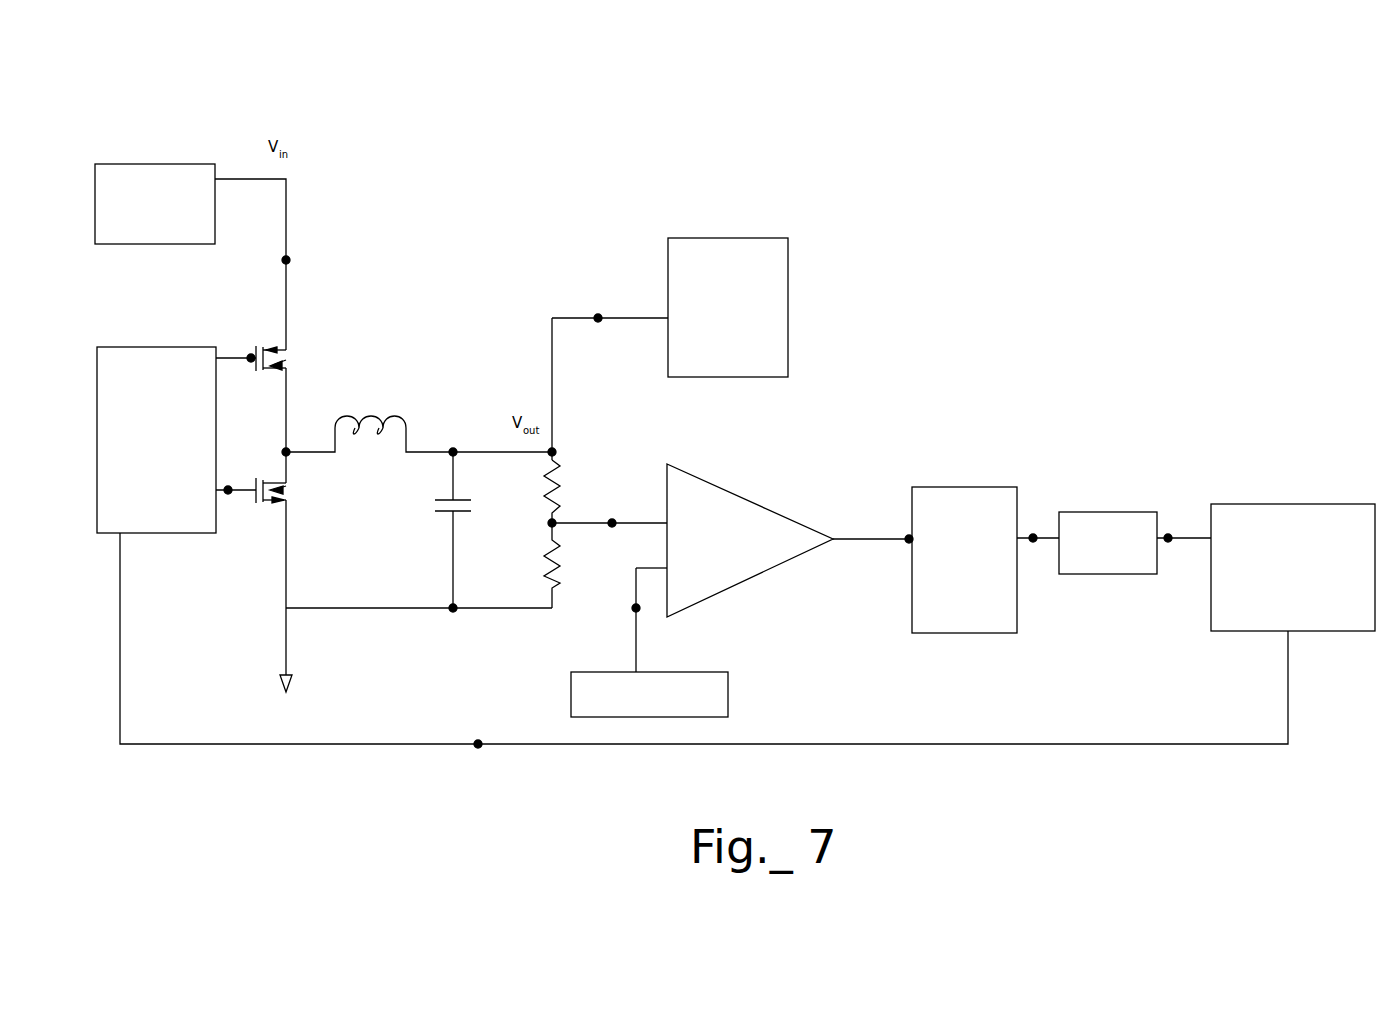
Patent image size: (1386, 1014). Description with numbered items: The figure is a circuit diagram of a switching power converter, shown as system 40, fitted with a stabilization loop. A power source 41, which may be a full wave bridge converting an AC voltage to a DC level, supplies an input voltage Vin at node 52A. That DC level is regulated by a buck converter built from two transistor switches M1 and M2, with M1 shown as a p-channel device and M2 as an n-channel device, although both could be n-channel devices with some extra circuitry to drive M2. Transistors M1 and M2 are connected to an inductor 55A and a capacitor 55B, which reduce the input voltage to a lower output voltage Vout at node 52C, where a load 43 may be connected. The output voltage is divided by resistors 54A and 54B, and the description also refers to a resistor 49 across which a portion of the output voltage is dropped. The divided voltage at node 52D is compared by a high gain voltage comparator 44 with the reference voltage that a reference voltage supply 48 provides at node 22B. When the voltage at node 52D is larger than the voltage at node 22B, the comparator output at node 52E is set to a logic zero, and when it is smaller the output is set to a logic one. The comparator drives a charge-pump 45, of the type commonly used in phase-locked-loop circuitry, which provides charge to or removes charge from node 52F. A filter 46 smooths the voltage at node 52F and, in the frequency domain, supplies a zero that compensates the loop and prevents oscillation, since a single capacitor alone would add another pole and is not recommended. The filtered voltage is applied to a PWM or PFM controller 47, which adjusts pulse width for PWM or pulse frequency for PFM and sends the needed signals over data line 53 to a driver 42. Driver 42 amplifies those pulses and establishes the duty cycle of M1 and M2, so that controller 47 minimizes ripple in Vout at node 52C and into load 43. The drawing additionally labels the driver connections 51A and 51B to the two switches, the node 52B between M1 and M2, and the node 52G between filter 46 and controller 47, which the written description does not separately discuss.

The system 40 is at (532, 112).
The power source 41 is at (144, 164).
The driver 42 is at (151, 347).
The load 43 is at (731, 238).
The voltage comparator 44 is at (722, 490).
The charge-pump 45 is at (554, 448).
The filter 46 is at (1118, 512).
The PWM or PFM controller 47 is at (1296, 504).
The reference voltage supply 48 is at (728, 697).
The resistor 49 is at (292, 678).
The first driver output node 51A is at (250, 356).
The second driver output node 51B is at (229, 494).
The input voltage node 52A is at (290, 258).
The switching node 52B is at (284, 452).
The output voltage node 52C is at (598, 315).
The feedback node 52D is at (612, 520).
The comparator output node 52E is at (905, 542).
The charge-pump output node 52F is at (1033, 534).
The filter output node 52G is at (1168, 534).
The data line 53 is at (478, 740).
The resistor 54A is at (548, 490).
The resistor 54B is at (566, 558).
The inductor 55A is at (374, 418).
The capacitor 55B is at (438, 500).
The reference voltage node 22B is at (640, 608).
The transistor switch M1 is at (284, 362).
The transistor switch M2 is at (284, 504).